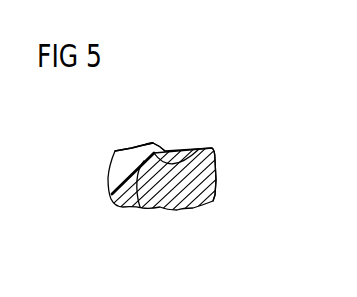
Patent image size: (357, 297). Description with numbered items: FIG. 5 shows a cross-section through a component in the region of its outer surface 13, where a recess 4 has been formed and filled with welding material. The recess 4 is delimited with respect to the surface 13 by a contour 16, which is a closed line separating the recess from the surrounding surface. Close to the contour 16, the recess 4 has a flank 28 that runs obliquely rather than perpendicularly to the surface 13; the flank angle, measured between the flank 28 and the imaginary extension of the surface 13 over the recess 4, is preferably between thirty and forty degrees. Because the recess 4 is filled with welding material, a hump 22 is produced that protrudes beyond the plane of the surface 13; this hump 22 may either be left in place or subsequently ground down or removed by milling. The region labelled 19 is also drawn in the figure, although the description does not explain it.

The recess 4 is at (108, 173).
The surface 13 is at (193, 145).
The contour 16 is at (215, 158).
The upper surface 19 is at (137, 145).
The hump 22 is at (152, 144).
The flank 28 is at (134, 206).